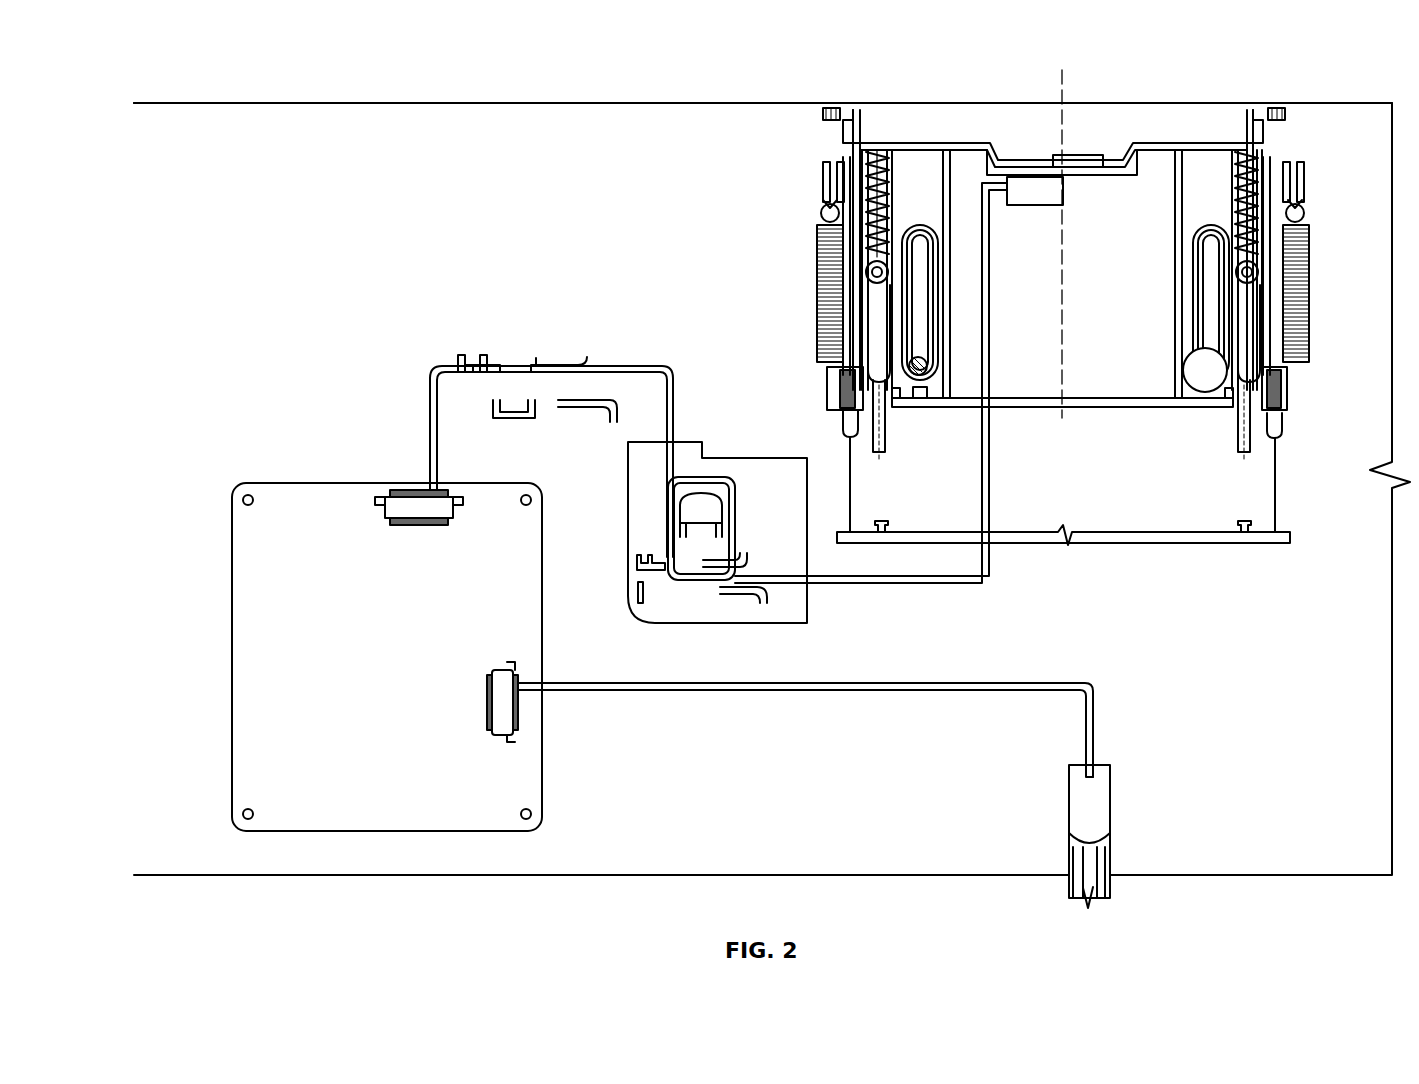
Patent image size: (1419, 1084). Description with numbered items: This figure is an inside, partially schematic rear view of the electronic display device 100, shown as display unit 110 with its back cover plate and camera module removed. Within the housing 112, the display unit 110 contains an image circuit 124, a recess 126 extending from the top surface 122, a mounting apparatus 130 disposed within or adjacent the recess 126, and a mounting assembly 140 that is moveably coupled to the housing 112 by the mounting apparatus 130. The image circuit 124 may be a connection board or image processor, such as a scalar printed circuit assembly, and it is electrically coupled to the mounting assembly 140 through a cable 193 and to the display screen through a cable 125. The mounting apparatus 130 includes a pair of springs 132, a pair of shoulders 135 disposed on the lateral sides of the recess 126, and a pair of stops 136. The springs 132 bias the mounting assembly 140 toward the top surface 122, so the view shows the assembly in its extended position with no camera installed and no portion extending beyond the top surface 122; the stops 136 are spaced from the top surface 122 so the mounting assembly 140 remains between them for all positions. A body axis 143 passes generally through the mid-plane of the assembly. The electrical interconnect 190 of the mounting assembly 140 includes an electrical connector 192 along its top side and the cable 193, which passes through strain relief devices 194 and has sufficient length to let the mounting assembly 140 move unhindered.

The beverage dispensing system 100 is at (170, 90).
The display unit 110 is at (276, 103).
The housing 112 is at (386, 114).
The top surface 122 is at (505, 98).
The image circuit 124 is at (300, 483).
The cable 125 is at (833, 692).
The recess 126 is at (1200, 120).
The mounting apparatus 130 is at (1099, 551).
The springs 132 is at (818, 340).
The shoulders 135 is at (823, 238).
The stops 136 is at (893, 524).
The mounting assembly 140 is at (1205, 405).
The body axis 143 is at (1066, 95).
The electrical interconnect 190 is at (1051, 325).
The electrical connector 192 is at (1092, 152).
The cable 193 is at (668, 418).
The strain relief devices 194 is at (550, 362).